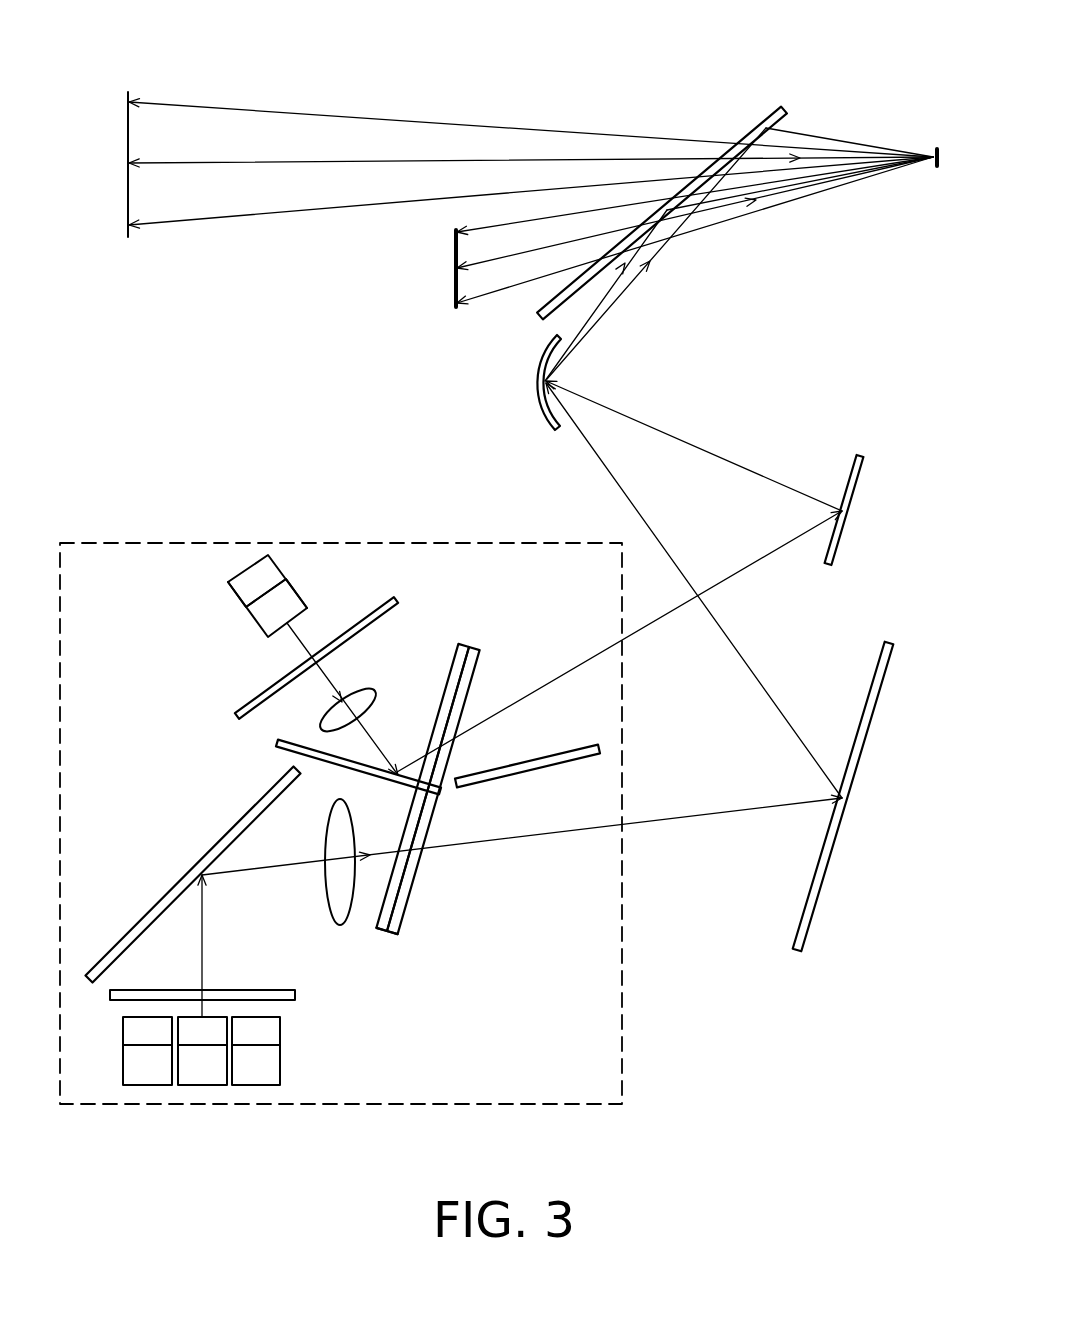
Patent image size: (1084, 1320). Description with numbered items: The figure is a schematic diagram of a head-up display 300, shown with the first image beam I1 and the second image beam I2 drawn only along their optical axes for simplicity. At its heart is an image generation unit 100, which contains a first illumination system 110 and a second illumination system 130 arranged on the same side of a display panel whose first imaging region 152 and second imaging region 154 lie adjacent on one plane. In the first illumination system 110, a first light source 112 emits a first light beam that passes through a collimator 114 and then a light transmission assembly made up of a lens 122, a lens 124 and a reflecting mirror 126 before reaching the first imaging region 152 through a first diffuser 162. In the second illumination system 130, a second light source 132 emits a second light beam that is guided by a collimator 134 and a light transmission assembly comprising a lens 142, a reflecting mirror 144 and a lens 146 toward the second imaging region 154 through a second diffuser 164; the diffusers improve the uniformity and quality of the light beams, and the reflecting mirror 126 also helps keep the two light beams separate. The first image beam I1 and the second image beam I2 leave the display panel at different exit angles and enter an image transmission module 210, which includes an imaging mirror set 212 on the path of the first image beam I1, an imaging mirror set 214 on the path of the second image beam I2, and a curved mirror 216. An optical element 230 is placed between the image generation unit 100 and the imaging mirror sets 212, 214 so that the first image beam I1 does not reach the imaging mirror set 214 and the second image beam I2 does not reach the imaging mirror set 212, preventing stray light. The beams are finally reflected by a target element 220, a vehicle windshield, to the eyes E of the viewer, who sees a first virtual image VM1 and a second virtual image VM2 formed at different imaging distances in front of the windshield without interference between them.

The image generation unit 100 is at (140, 542).
The first illumination system 110 is at (193, 610).
The first light source 112 is at (250, 593).
The collimator 114 is at (268, 625).
The lens 122 is at (397, 600).
The lens 124 is at (367, 698).
The reflecting mirror 126 is at (273, 743).
The second illumination system 130 is at (324, 926).
The second light source 132 is at (263, 1073).
The collimator 134 is at (263, 1035).
The lens 142 is at (280, 997).
The reflecting mirror 144 is at (235, 832).
The lens 146 is at (333, 887).
The first imaging region 152 is at (480, 650).
The second imaging region 154 is at (397, 920).
The first diffuser 162 is at (462, 647).
The second diffuser 164 is at (380, 935).
The image transmission module 210 is at (518, 475).
The imaging mirror set 212 is at (864, 474).
The imaging mirror set 214 is at (895, 670).
The curved mirror 216 is at (548, 427).
The target element 220 is at (768, 120).
The optical element 230 is at (568, 755).
The head-up display 300 is at (907, 1115).
The first virtual image VM1 is at (455, 258).
The second virtual image VM2 is at (128, 148).
The eyes E is at (942, 167).
The first image beam I1 is at (781, 546).
The second image beam I2 is at (732, 814).